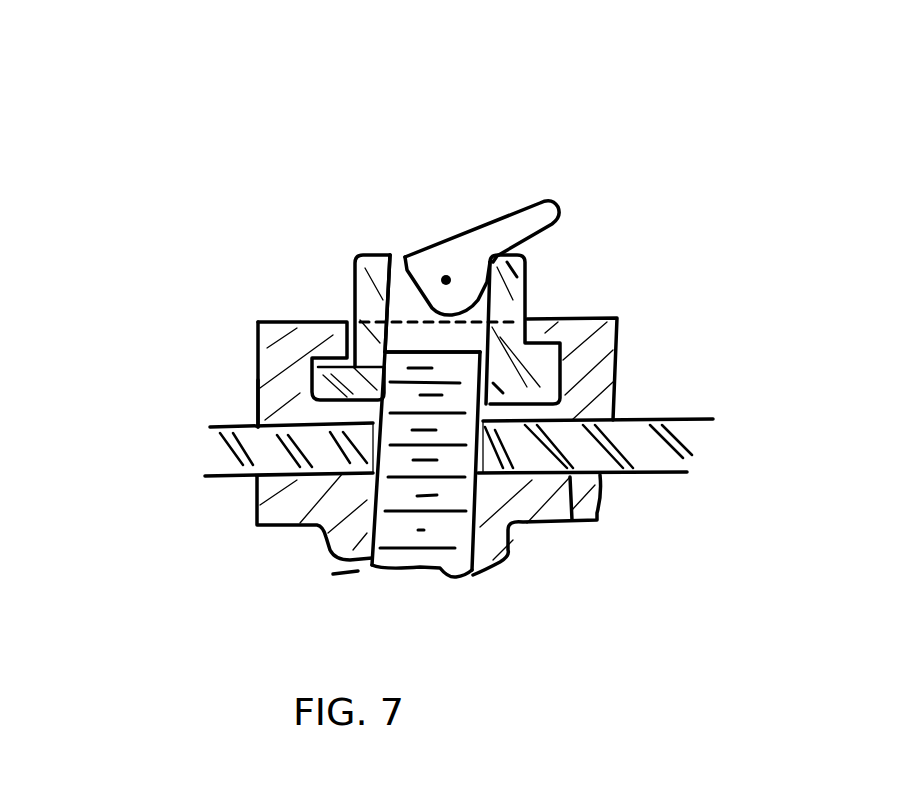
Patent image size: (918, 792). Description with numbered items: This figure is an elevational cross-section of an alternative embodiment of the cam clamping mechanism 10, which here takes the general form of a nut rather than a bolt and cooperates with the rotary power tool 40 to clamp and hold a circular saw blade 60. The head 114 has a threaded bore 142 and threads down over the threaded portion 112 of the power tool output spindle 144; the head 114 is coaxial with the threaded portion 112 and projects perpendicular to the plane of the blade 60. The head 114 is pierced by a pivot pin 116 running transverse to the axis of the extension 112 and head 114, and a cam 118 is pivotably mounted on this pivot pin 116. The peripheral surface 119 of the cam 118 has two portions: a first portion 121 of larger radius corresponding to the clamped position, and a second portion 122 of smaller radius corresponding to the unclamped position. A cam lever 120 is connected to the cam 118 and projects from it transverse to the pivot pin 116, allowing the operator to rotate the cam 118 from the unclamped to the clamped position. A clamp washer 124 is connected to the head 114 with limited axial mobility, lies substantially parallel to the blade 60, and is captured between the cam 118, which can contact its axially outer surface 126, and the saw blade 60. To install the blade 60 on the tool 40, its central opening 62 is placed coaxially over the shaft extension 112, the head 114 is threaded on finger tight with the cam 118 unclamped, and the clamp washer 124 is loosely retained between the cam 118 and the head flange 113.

The clamping mechanism 10 is at (633, 172).
The rotary power tool 40 is at (303, 582).
The circular saw blade 60 is at (707, 438).
The central opening 62 is at (483, 420).
The threaded portion 112 is at (463, 487).
The head flange 113 is at (300, 390).
The head 114 is at (365, 252).
The pivot pin 116 is at (447, 272).
The cam 118 is at (470, 280).
The peripheral surface 119 is at (527, 284).
The cam lever 120 is at (548, 197).
The first portion 121 is at (493, 323).
The second portion 122 is at (425, 302).
The clamp washer 124 is at (627, 350).
The axially outer surface 126 is at (307, 322).
The threaded bore 142 is at (415, 253).
The power tool output spindle 144 is at (503, 567).